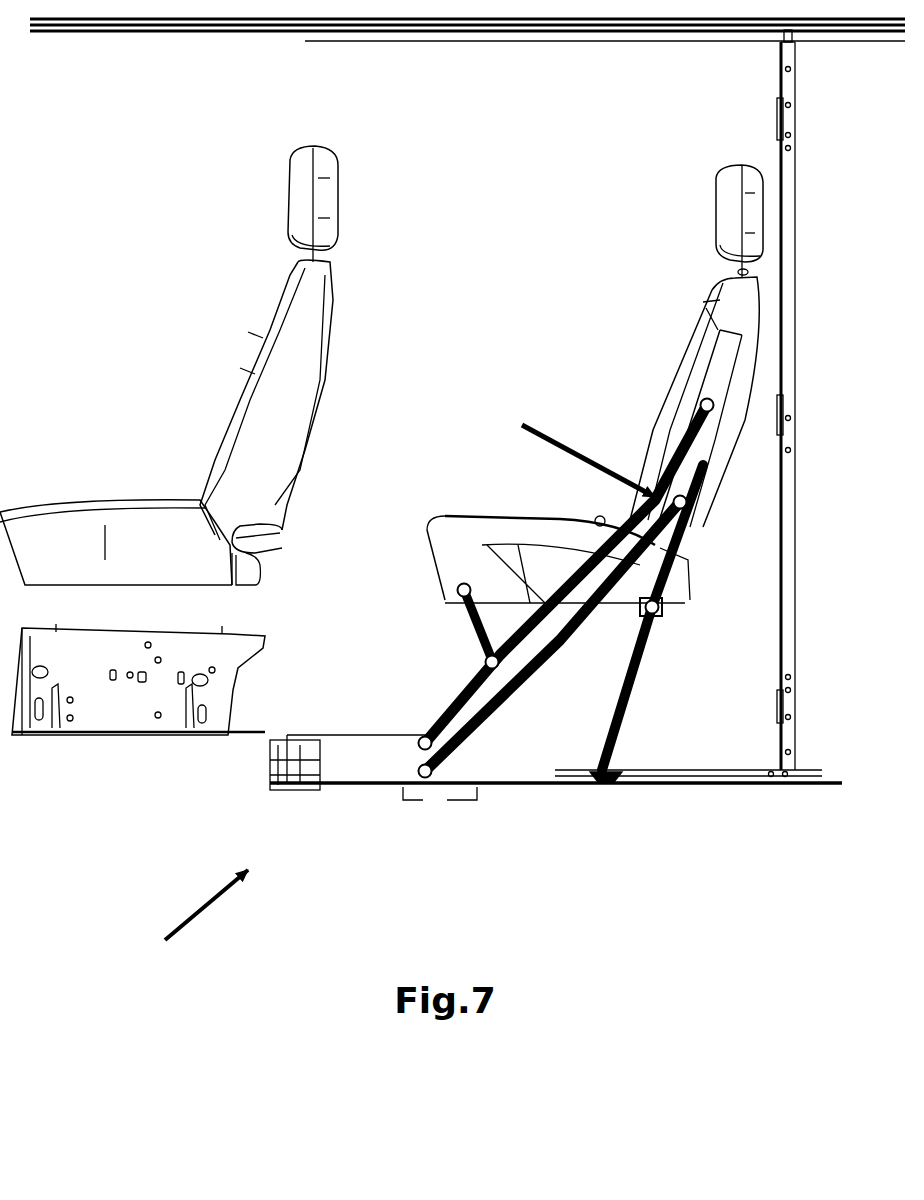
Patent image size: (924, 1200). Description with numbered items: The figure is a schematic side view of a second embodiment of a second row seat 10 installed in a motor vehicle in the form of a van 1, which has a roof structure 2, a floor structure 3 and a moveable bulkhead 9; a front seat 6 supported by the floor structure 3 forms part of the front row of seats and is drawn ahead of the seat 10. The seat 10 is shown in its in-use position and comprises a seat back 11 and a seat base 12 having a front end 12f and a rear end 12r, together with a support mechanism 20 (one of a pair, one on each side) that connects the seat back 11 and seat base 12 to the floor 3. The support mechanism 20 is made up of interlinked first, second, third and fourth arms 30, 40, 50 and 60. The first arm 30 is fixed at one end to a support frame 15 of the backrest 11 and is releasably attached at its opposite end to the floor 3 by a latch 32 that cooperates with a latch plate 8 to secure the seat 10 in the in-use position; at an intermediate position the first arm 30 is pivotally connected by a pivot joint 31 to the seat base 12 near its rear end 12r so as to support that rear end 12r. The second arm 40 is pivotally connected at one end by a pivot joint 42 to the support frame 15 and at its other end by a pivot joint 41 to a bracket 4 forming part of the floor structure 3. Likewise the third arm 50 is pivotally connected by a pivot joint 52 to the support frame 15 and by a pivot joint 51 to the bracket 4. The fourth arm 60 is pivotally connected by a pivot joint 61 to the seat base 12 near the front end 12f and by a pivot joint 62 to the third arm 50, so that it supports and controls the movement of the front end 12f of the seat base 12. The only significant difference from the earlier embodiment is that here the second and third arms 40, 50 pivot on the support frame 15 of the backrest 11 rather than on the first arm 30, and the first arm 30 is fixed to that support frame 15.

The van 1 is at (187, 920).
The roof structure 2 is at (135, 33).
The floor structure 3 is at (510, 790).
The bracket 4 is at (362, 735).
The front seat 6 is at (230, 355).
The latch plate 8 is at (693, 777).
The moveable bulkhead 9 is at (782, 104).
The seat 10 is at (555, 385).
The seat back 11 is at (688, 345).
The seat base 12 is at (555, 501).
The front end 12f is at (427, 555).
The rear end 12r is at (685, 590).
The support frame 15 is at (718, 330).
The support mechanism 20 is at (574, 447).
The first arm 30 is at (640, 675).
The pivot joint 31 is at (668, 607).
The latch 32 is at (595, 770).
The second arm 40 is at (540, 675).
The pivot joint 41 is at (430, 785).
The pivot joint 42 is at (688, 503).
The third arm 50 is at (540, 612).
The pivot joint 51 is at (420, 738).
The pivot joint 52 is at (702, 405).
The fourth arm 60 is at (475, 632).
The pivot joint 61 is at (456, 594).
The pivot joint 62 is at (484, 662).